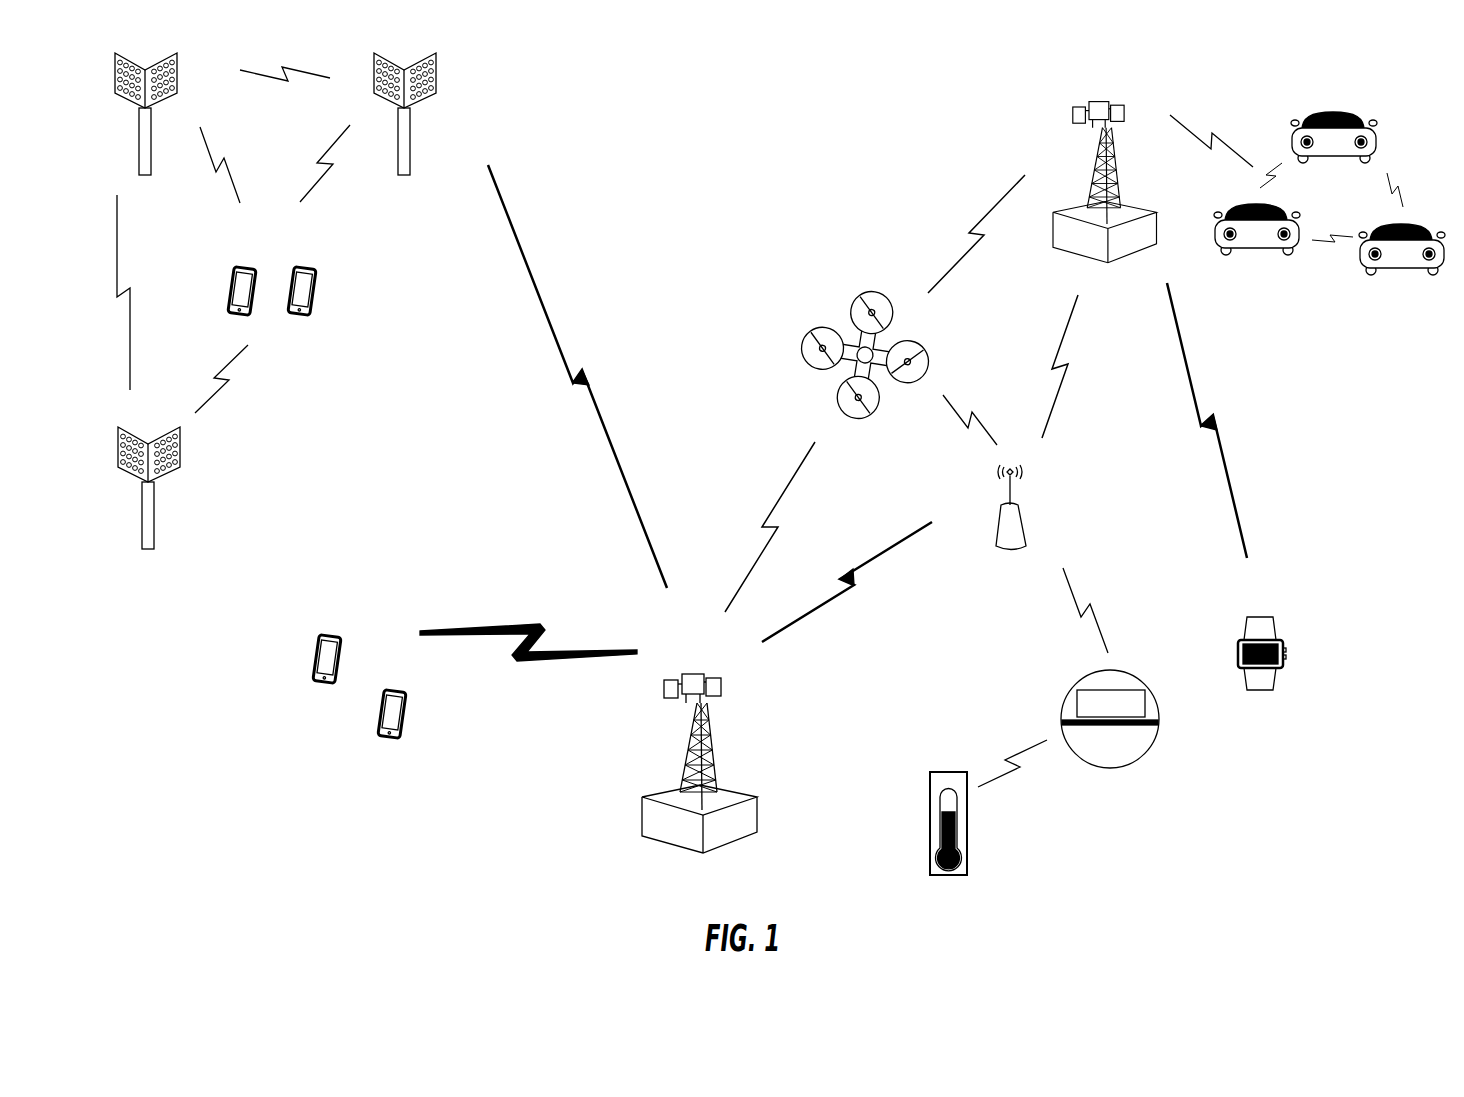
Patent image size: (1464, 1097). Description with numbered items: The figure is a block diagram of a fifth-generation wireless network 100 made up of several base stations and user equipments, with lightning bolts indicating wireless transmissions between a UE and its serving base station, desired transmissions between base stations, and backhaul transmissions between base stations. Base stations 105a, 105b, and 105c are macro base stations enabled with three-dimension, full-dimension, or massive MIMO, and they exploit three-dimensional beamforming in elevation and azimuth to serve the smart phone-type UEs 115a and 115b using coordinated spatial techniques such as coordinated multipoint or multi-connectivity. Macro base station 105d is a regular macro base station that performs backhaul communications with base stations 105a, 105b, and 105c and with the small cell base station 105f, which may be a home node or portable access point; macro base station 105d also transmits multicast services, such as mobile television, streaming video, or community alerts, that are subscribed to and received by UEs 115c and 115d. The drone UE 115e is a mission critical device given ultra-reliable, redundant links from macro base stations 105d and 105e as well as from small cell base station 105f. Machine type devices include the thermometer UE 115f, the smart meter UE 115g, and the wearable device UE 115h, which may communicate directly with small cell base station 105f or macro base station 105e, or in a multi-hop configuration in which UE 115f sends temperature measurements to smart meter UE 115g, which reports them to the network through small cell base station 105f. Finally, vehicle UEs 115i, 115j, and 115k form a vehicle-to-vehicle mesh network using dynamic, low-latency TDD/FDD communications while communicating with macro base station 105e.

The 5G network 100 is at (858, 82).
The macro base station enabled with 3D, FD, or massive MIMO 105a is at (139, 149).
The macro base station enabled with 3D, FD, or massive MIMO 105b is at (410, 150).
The macro base station enabled with 3D, FD, or massive MIMO 105c is at (143, 538).
The macro base station 105d is at (658, 840).
The macro base station 105e is at (1070, 252).
The small cell base station 105f is at (997, 540).
The UE 115a is at (230, 275).
The UE 115b is at (315, 287).
The UE 115c is at (312, 643).
The UE 115d is at (403, 707).
The UE (drone) 115e is at (802, 348).
The UE (thermometer) 115f is at (967, 867).
The UE (smart meter) 115g is at (1129, 763).
The UE (wearable device) 115h is at (1271, 689).
The UE 115i is at (1353, 111).
The UE 115j is at (1428, 270).
The UE 115k is at (1235, 255).